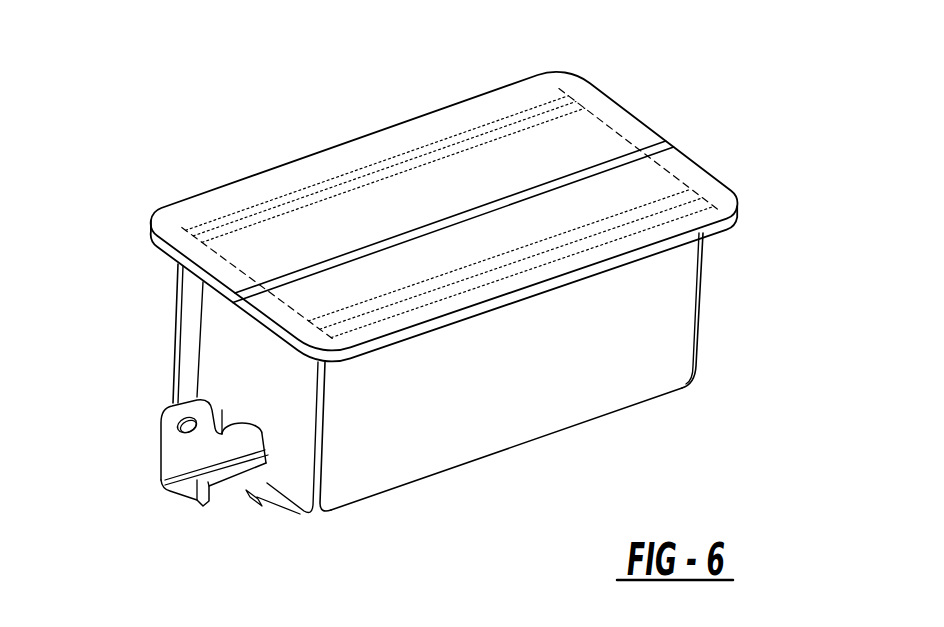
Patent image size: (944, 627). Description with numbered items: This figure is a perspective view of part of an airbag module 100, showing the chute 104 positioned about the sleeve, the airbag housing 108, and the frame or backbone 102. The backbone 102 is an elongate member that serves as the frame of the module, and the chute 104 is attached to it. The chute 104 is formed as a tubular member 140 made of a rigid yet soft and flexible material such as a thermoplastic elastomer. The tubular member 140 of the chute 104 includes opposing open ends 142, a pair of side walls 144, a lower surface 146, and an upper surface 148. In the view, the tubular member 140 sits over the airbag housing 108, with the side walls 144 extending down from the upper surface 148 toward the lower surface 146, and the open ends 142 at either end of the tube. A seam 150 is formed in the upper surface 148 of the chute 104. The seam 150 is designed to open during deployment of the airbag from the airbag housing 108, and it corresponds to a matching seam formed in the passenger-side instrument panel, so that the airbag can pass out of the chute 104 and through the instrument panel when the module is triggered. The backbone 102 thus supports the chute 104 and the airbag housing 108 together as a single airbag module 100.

The airbag module 100 is at (126, 178).
The backbone 102 is at (173, 493).
The chute 104 is at (617, 98).
The airbag housing 108 is at (284, 375).
The tubular member 140 is at (680, 298).
The opposing open ends 142 is at (300, 435).
The side walls 144 is at (657, 337).
The lower surface 146 is at (600, 417).
The upper surface 148 is at (705, 182).
The seam 150 is at (437, 215).